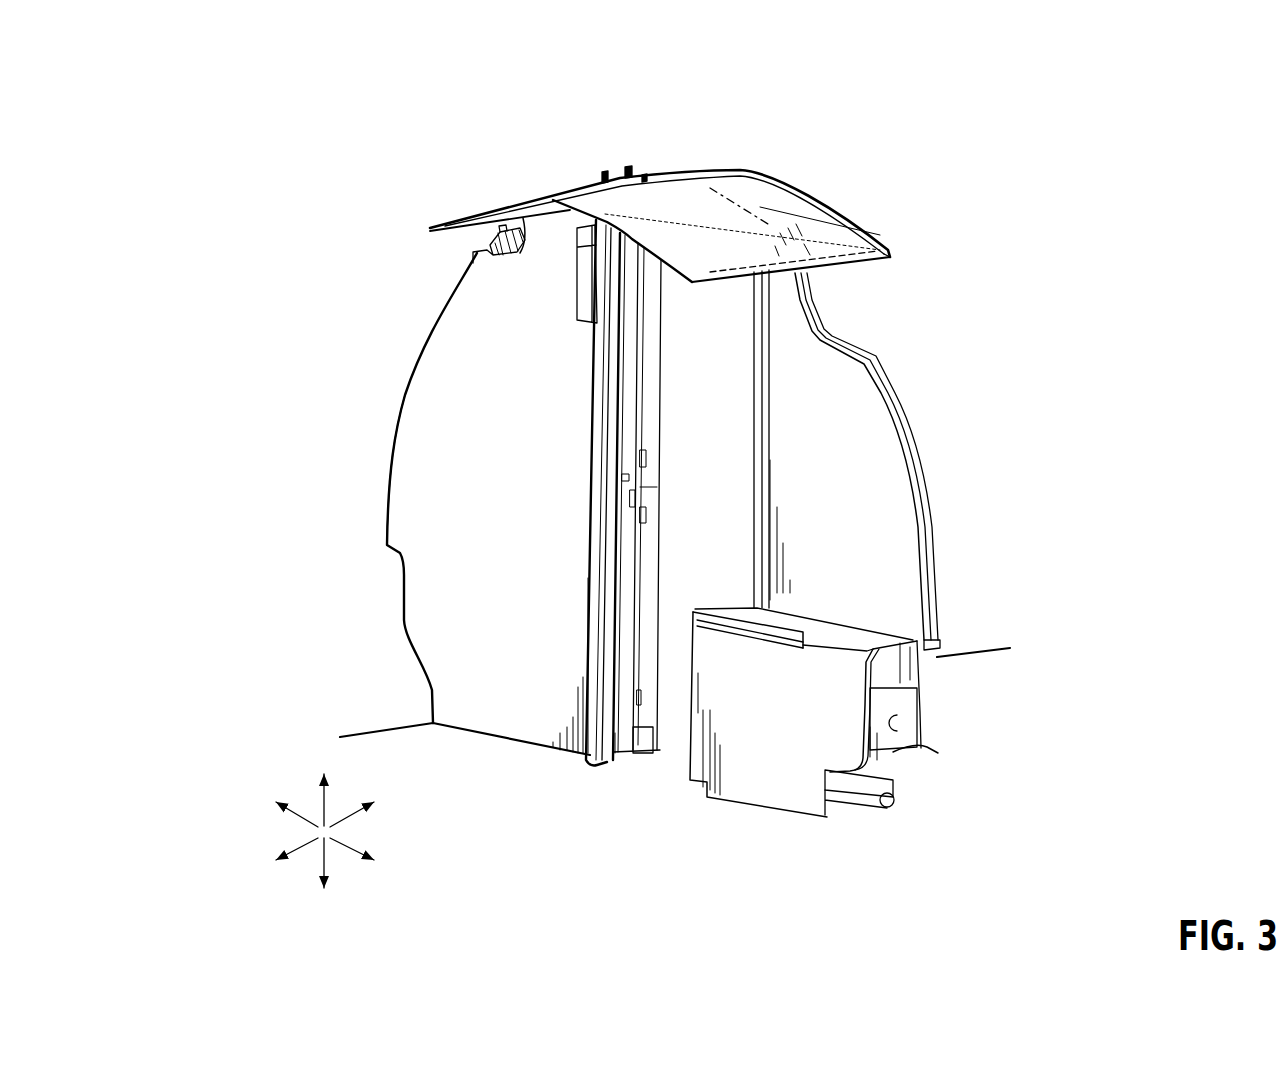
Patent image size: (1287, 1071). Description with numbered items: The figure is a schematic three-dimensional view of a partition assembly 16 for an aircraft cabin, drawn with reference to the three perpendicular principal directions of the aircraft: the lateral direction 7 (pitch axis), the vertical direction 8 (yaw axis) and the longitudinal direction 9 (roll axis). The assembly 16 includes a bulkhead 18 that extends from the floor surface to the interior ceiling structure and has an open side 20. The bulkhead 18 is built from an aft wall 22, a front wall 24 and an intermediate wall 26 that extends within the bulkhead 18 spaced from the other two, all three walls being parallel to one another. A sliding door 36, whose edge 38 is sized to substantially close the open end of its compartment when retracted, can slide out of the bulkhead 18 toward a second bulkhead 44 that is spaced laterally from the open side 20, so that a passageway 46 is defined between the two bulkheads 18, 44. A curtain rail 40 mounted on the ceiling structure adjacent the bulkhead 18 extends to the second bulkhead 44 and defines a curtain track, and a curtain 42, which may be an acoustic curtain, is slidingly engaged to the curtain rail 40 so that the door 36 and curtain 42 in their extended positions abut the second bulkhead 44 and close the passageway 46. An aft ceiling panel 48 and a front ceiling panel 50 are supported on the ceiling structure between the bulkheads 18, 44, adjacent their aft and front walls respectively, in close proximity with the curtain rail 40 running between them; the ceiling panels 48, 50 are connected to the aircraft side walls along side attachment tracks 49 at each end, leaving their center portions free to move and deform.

The lateral direction 7 is at (337, 840).
The vertical direction 8 is at (323, 808).
The longitudinal direction 9 is at (353, 813).
The partition assembly 16 is at (924, 268).
The bulkhead 18 is at (526, 416).
The open side 20 is at (647, 713).
The aft wall 22 is at (430, 430).
The front wall 24 is at (657, 423).
The intermediate wall 26 is at (630, 305).
The sliding door 36 is at (634, 248).
The edge 38 is at (642, 330).
The curtain rail 40 is at (727, 191).
The curtain 42 is at (653, 645).
The second bulkhead 44 is at (862, 461).
The passageway 46 is at (727, 520).
The aft ceiling panel 48 is at (630, 197).
The side attachment tracks 49 is at (888, 255).
The front ceiling panel 50 is at (840, 228).